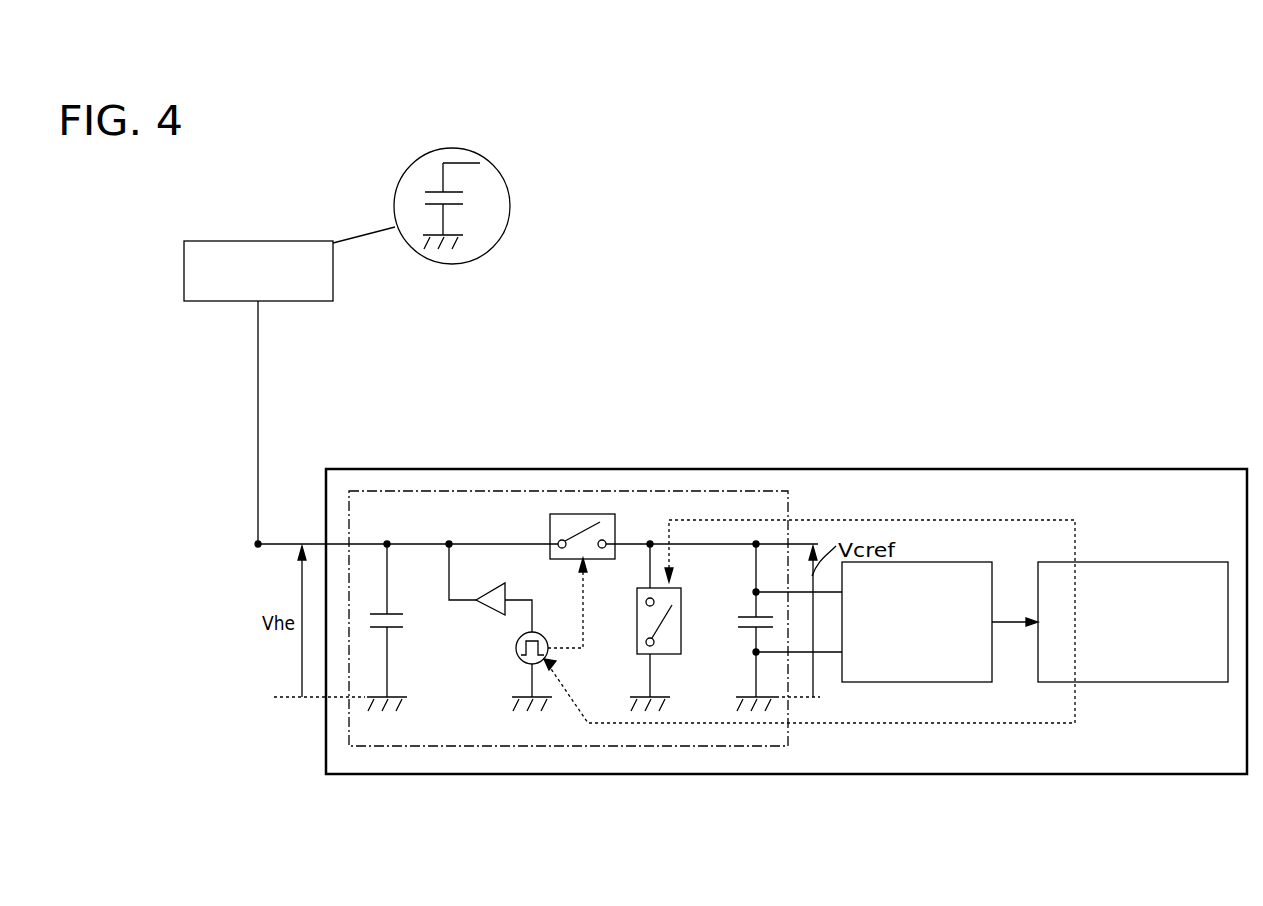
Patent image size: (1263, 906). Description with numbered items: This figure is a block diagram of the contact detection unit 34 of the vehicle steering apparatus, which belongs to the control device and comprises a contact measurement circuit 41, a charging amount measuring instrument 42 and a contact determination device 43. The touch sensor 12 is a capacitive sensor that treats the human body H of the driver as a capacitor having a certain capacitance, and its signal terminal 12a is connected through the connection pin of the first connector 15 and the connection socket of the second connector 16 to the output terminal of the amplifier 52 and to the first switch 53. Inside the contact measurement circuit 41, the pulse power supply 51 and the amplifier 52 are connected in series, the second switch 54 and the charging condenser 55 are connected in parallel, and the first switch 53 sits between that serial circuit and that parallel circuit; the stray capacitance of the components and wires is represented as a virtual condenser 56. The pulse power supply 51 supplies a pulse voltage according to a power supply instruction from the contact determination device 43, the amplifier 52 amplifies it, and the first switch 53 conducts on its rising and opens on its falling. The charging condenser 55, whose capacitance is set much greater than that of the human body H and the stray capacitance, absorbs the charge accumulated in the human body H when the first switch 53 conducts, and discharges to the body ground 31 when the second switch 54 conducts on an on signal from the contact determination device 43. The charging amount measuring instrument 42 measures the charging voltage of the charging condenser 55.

The touch sensor 12 is at (257, 241).
The signal terminal 12a is at (256, 301).
The first connector 15 is at (516, 571).
The second connector 16 is at (258, 544).
The body ground 31 is at (550, 697).
The contact detection unit 34 is at (1073, 469).
The contact measurement circuit 41 is at (418, 491).
The charging amount measuring instrument 42 is at (915, 682).
The contact determination device 43 is at (1130, 682).
The pulse power supply 51 is at (519, 657).
The amplifier 52 is at (507, 588).
The first switch 53 is at (550, 521).
The second switch 54 is at (637, 622).
The charging condenser 55 is at (738, 622).
The virtual condenser 56 is at (400, 627).
The human body H is at (510, 206).